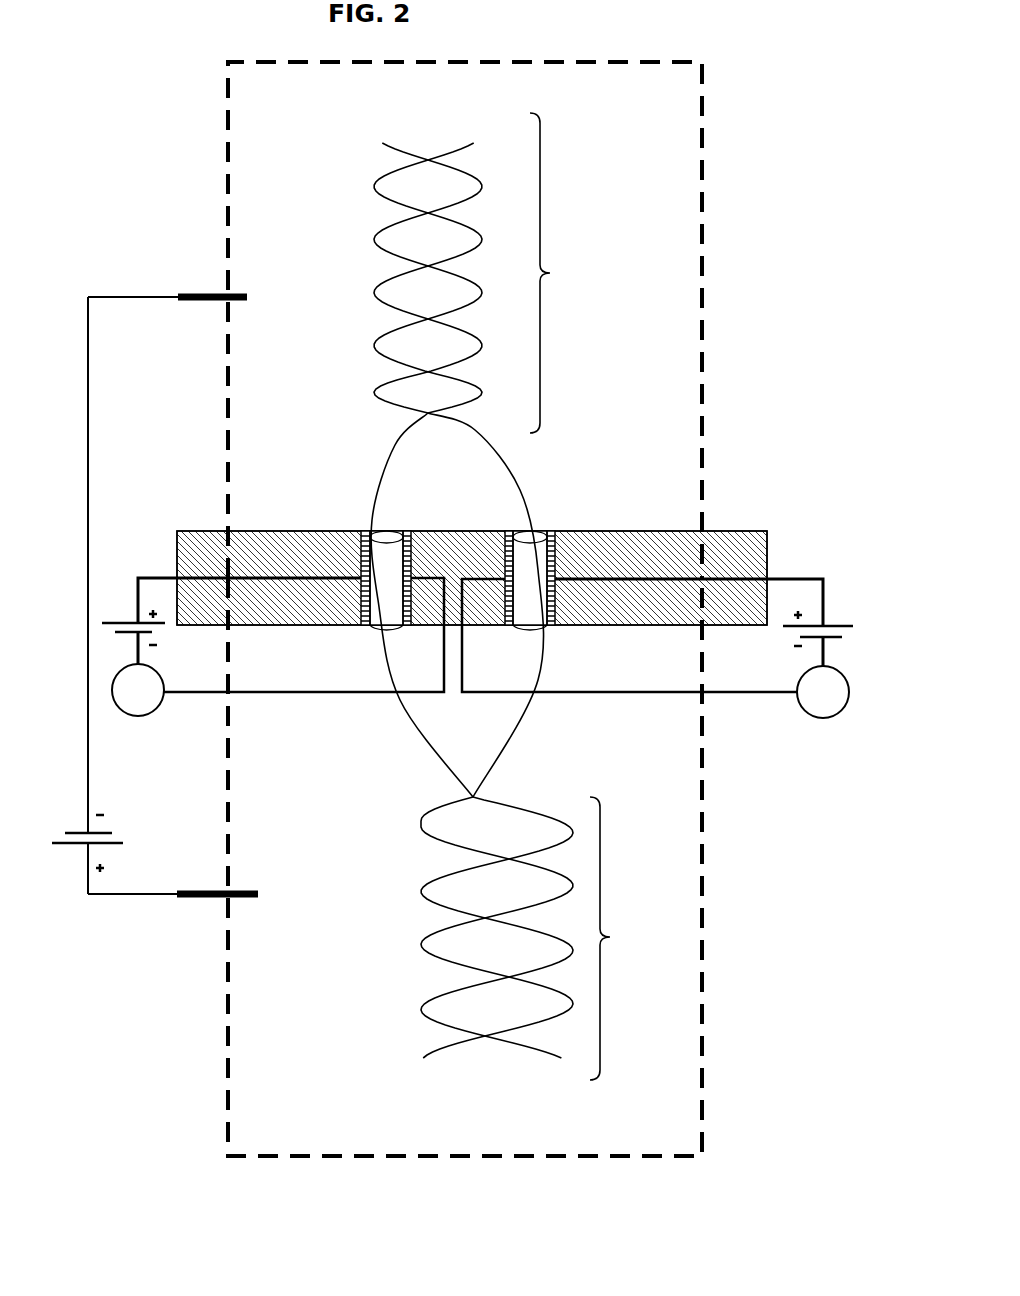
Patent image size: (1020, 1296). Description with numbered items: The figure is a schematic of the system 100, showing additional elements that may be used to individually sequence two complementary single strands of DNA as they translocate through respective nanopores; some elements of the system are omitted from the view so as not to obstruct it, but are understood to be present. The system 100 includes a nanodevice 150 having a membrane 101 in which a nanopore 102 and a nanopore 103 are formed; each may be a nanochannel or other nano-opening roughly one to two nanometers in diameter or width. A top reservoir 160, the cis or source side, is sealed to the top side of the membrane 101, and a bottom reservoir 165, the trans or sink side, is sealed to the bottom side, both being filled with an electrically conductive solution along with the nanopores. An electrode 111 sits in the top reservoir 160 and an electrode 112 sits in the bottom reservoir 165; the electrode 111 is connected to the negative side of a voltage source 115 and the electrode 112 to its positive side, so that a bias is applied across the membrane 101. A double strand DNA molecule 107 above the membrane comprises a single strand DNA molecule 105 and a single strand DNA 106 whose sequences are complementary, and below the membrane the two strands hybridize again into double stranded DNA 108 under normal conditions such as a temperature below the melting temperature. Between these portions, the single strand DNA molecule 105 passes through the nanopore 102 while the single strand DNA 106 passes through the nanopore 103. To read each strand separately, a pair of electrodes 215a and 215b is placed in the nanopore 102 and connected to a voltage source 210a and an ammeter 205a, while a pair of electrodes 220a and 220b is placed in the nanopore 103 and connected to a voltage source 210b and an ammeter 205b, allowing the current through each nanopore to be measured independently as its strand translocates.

The system 100 is at (119, 104).
The membrane 101 is at (203, 542).
The nanopore 102 is at (384, 540).
The nanopore 103 is at (543, 540).
The single strand DNA molecule 105 is at (383, 138).
The single strand DNA 106 is at (470, 138).
The double strand DNA molecule 107 is at (550, 273).
The double stranded DNA 108 is at (610, 937).
The electrode 111 is at (205, 291).
The electrode 112 is at (215, 898).
The voltage source 115 is at (75, 846).
The nanodevice 150 is at (768, 529).
The top reservoir 160 is at (707, 155).
The bottom reservoir 165 is at (710, 854).
The ammeter 205a is at (140, 716).
The ammeter 205b is at (802, 718).
The voltage source 210a is at (122, 621).
The voltage source 210b is at (830, 624).
The electrode 215a is at (360, 604).
The electrode 215b is at (413, 565).
The electrode 220a is at (558, 604).
The electrode 220b is at (507, 603).